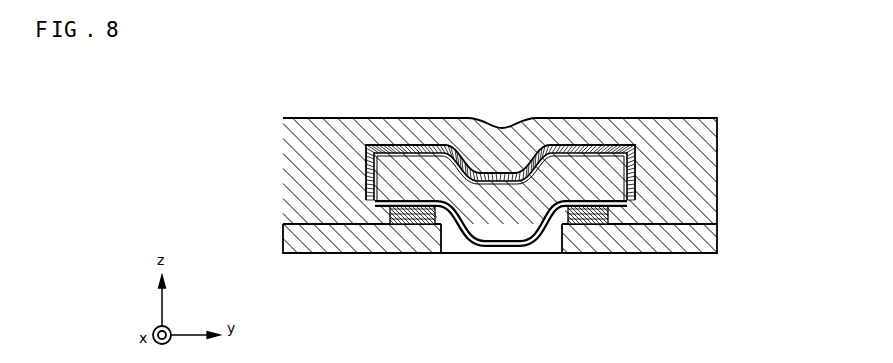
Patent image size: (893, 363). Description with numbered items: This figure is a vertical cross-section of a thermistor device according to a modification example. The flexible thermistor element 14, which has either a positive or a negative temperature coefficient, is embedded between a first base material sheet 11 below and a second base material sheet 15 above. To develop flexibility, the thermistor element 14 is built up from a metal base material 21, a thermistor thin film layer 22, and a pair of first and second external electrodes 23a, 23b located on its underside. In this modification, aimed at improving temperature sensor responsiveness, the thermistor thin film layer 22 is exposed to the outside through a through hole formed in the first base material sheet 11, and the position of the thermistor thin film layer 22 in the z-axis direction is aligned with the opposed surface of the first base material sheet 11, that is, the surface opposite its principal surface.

The first base material sheet 11 is at (712, 243).
The flexible thermistor element 14 is at (362, 172).
The second base material sheet 15 is at (710, 163).
The metal base material 21 is at (637, 192).
The thermistor thin film layer 22 is at (495, 210).
The first external electrode 23a is at (411, 223).
The second external electrode 23b is at (590, 223).